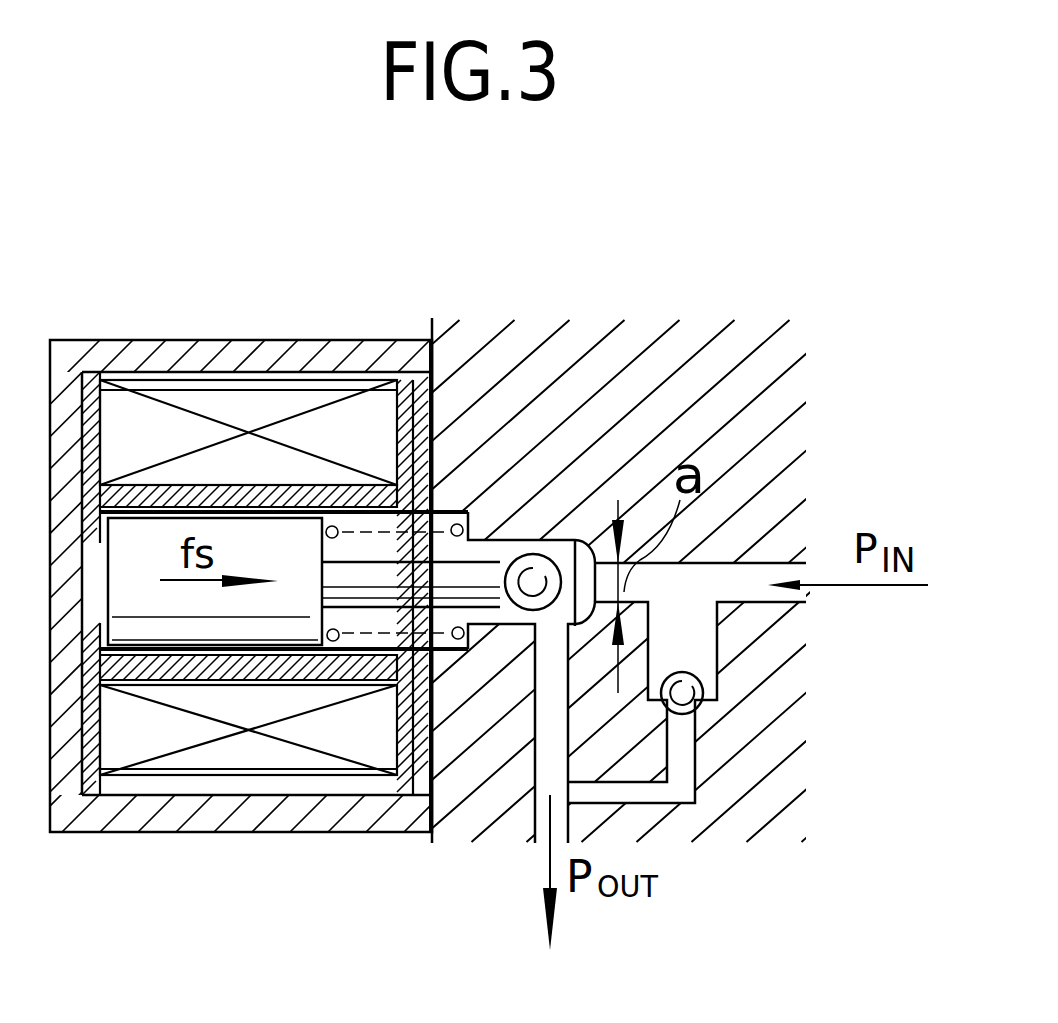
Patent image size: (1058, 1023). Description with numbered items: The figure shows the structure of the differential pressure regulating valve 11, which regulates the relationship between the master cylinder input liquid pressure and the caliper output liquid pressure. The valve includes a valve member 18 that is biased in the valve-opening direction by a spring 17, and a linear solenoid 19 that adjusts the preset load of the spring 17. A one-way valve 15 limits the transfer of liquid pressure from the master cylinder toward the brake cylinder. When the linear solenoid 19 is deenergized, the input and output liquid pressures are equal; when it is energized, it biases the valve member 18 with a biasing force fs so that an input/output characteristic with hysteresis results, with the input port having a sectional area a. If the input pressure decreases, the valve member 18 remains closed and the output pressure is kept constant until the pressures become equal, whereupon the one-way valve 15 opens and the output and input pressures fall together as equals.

The differential pressure regulating valve 11 is at (365, 298).
The linear solenoid 19 is at (248, 402).
The spring 17 is at (457, 524).
The valve member 18 is at (540, 573).
The one-way valve 15 is at (689, 680).